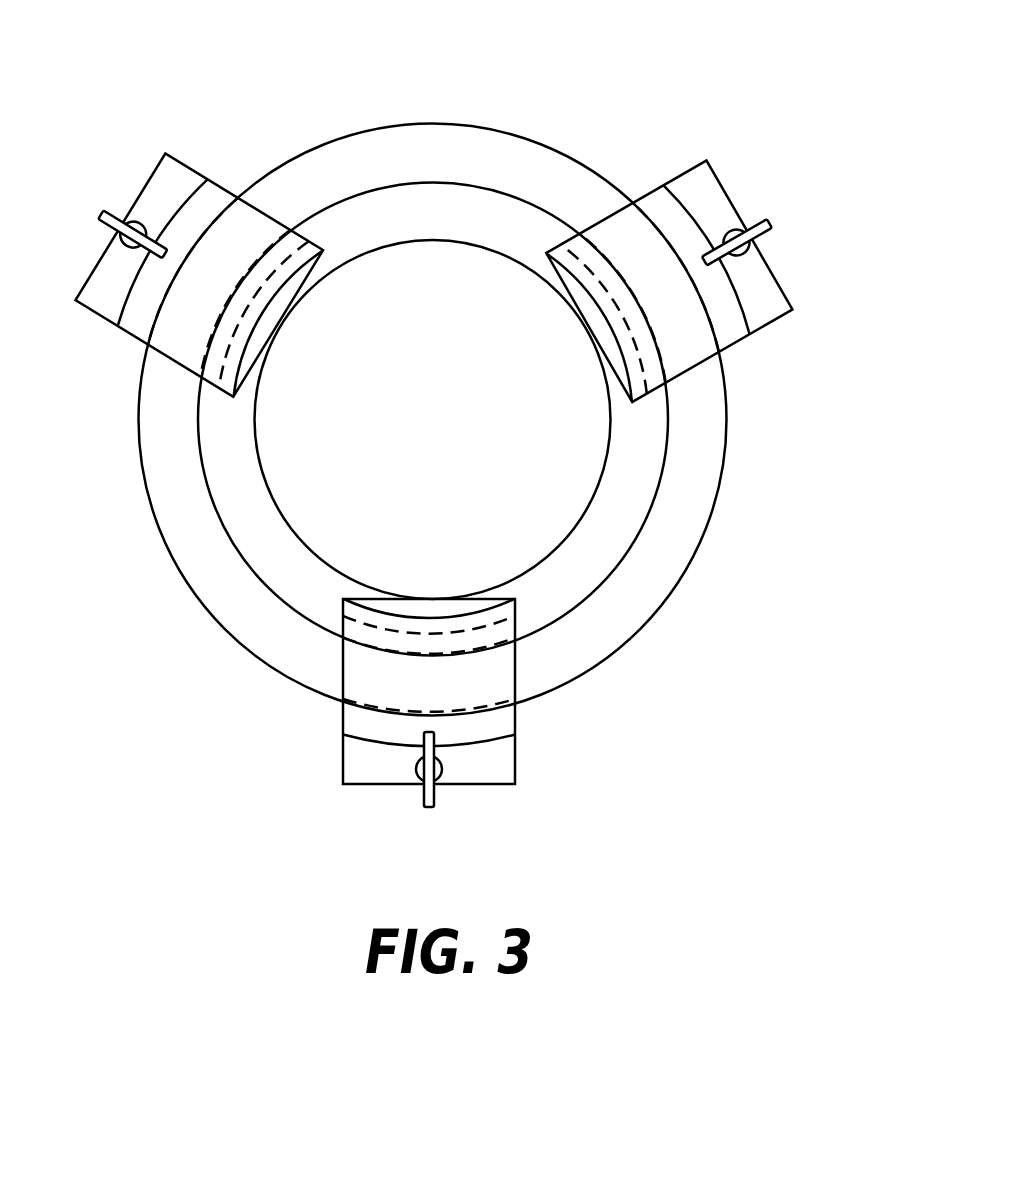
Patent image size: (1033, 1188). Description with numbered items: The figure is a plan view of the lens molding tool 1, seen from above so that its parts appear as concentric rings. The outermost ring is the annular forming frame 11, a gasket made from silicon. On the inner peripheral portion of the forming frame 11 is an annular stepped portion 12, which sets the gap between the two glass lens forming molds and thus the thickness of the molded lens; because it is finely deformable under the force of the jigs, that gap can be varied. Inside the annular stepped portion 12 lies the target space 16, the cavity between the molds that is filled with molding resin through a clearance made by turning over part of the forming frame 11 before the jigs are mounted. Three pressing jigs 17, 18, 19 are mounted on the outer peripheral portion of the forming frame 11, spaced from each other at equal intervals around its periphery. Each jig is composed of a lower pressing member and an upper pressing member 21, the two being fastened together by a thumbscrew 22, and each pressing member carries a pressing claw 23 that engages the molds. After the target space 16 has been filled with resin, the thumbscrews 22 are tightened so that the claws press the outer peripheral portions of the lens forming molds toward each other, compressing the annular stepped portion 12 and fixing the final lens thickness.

The rotor assembly 1 is at (471, 367).
The forming frame 11 is at (660, 572).
The annular stepped portion 12 is at (628, 491).
The target space 16 is at (414, 420).
The pressing jig 17 is at (140, 315).
The pressing jig 18 is at (500, 726).
The pressing jig 19 is at (720, 312).
The upper pressing member 21 is at (207, 203).
The thumbscrew 22 is at (112, 213).
The pressing claw 23 is at (285, 250).